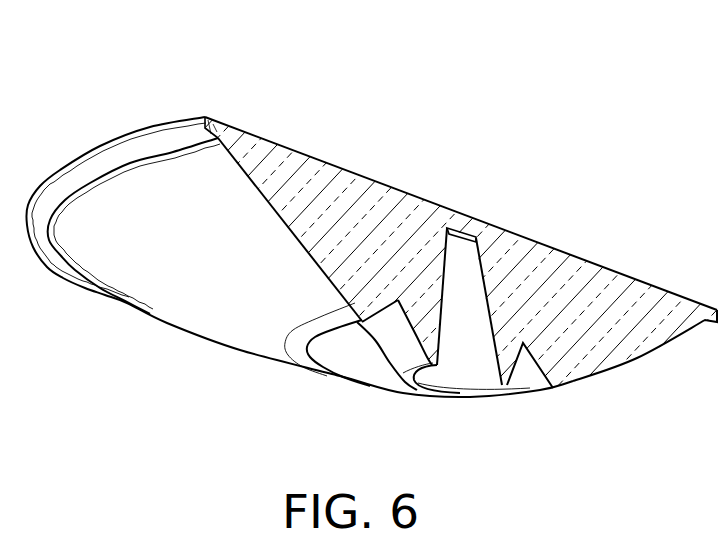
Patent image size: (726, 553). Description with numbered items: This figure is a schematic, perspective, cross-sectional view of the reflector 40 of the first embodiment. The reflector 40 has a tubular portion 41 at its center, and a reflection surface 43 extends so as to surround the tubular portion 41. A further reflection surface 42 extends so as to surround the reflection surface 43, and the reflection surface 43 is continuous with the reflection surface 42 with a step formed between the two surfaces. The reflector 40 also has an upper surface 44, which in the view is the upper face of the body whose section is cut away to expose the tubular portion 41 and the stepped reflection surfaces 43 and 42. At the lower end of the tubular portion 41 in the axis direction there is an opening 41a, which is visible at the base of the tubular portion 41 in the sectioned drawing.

The reflector 40 is at (157, 110).
The tubular portion 41 is at (458, 282).
The opening 41a is at (455, 384).
The reflection surface 42 is at (600, 370).
The reflection surface 43 is at (503, 350).
The upper surface 44 is at (583, 258).